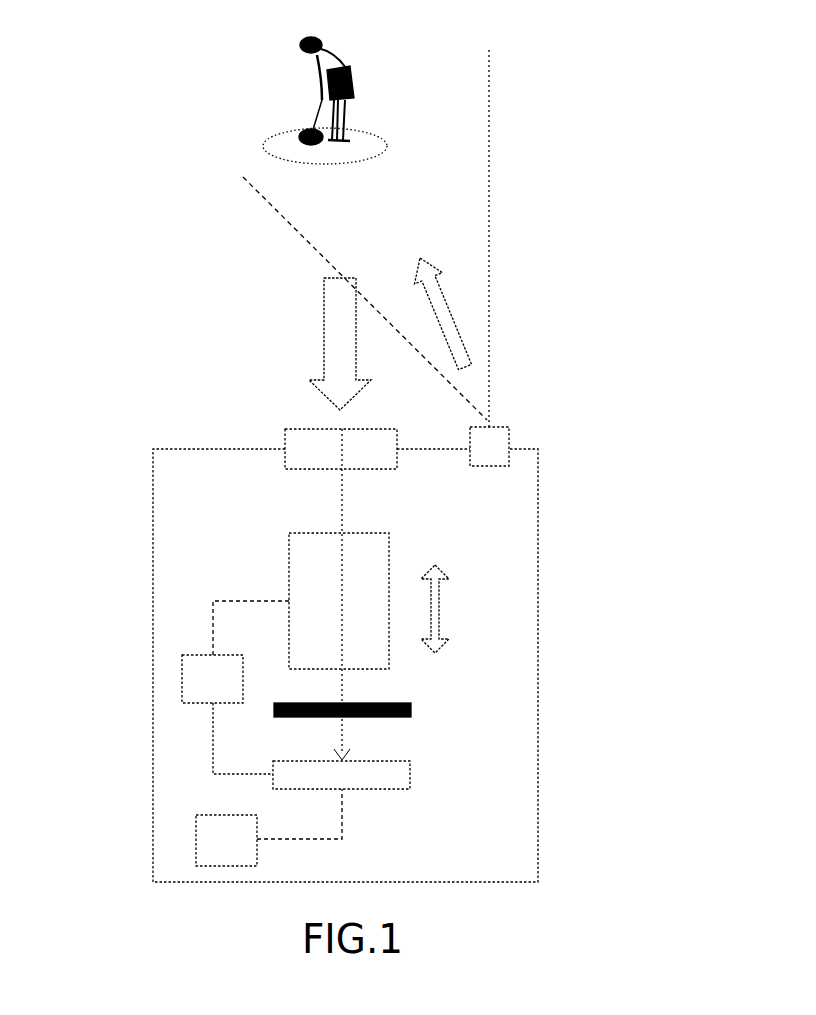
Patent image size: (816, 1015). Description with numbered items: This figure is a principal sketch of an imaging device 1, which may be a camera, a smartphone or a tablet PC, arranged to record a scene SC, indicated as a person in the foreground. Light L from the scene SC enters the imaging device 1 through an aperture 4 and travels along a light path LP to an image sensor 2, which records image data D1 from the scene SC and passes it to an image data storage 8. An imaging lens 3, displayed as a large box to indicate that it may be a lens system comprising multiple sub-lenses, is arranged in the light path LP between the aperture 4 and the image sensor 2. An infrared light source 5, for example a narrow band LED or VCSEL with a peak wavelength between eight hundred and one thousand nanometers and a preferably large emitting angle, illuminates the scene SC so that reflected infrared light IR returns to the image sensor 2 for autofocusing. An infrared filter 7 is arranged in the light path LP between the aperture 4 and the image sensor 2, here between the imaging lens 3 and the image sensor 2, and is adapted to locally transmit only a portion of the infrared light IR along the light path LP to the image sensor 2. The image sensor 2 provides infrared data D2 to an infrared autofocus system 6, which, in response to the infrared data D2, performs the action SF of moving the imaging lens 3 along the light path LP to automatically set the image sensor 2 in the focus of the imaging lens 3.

The imaging device 1 is at (163, 418).
The image sensor 2 is at (413, 774).
The imaging lens 3 is at (288, 572).
The aperture 4 is at (370, 453).
The infrared light source 5 is at (493, 445).
The infrared autofocus system 6 is at (212, 682).
The infrared filter 7 is at (415, 712).
The image data storage 8 is at (230, 843).
The scene SC is at (253, 80).
The light L is at (308, 332).
The infrared light IR is at (447, 292).
The light path LP is at (337, 505).
The moving the imaging lens to automatically setting the image sensor in focus SF is at (448, 620).
The image data D1 is at (347, 815).
The infrared data D2 is at (208, 745).